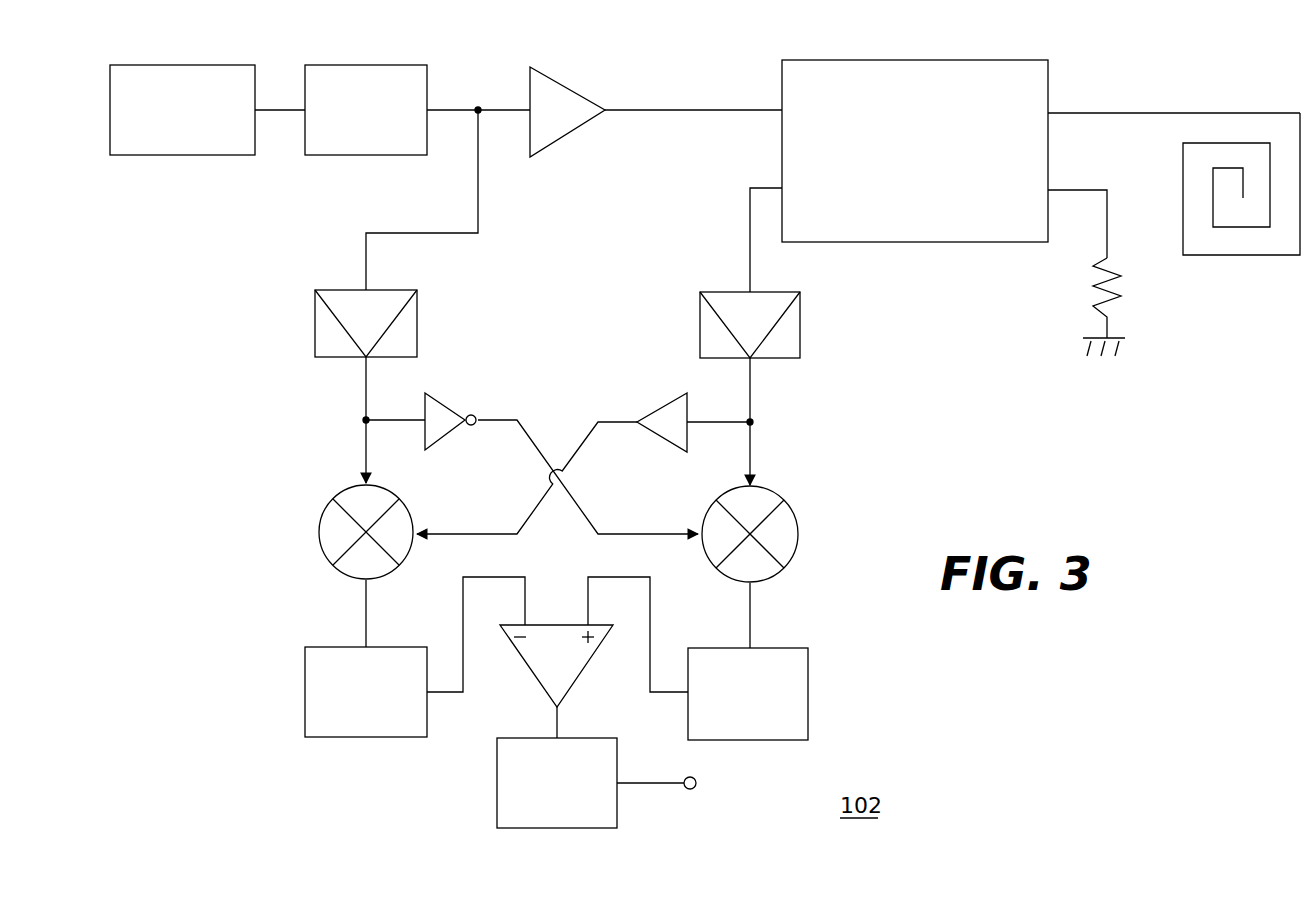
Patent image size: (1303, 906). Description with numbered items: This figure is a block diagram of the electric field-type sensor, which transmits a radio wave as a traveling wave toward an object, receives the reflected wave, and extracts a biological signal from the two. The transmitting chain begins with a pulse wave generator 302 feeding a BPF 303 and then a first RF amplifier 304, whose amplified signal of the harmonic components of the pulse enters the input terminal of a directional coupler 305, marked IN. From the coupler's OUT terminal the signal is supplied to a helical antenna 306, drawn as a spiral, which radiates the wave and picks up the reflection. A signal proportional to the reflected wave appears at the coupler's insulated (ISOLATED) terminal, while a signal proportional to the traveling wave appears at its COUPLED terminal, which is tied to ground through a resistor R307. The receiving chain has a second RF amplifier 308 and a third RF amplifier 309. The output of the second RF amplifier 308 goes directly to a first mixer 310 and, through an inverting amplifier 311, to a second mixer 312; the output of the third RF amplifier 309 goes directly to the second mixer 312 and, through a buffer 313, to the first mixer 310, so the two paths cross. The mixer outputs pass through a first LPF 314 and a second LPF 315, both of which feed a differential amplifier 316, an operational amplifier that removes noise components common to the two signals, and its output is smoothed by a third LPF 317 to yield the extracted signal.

The pulse wave generator 302 is at (215, 65).
The BPF 303 is at (385, 65).
The first RF amplifier 304 is at (547, 70).
The directional coupler 305 is at (800, 60).
The helical antenna 306 is at (1215, 113).
The resistor R307 is at (1133, 307).
The second RF amplifier 308 is at (315, 320).
The third RF amplifier 309 is at (800, 347).
The first mixer 310 is at (320, 525).
The inverting amplifier 311 is at (447, 407).
The second mixer 312 is at (798, 528).
The buffer 313 is at (663, 407).
The first LPF 314 is at (305, 705).
The second LPF 315 is at (808, 703).
The differential amplifier 316 is at (583, 672).
The third LPF 317 is at (497, 798).